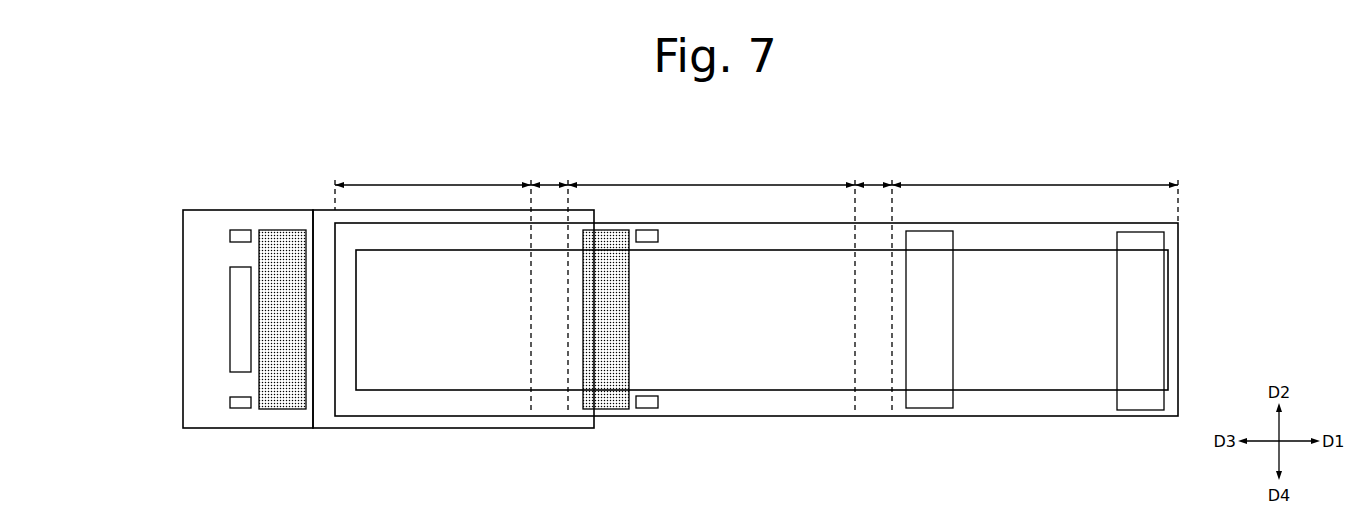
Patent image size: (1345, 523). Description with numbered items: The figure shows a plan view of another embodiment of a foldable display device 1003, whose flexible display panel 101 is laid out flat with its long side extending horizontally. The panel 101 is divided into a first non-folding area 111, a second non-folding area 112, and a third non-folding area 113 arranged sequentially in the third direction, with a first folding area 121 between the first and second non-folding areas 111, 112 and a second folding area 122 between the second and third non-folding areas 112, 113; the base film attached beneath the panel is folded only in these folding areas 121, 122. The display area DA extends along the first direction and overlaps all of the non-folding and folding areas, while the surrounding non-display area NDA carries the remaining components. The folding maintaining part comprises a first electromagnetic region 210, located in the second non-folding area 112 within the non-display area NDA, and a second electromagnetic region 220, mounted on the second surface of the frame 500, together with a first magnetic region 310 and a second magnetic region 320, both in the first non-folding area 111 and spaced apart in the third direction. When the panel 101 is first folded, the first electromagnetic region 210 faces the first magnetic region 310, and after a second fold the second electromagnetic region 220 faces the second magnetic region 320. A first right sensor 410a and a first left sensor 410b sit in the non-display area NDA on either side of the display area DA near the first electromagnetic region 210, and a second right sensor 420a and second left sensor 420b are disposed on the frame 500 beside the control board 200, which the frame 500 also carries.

The foldable display device 1003 is at (1110, 110).
The flexible display panel 101 is at (1197, 233).
The first non-folding area 111 is at (1035, 192).
The second non-folding area 112 is at (711, 175).
The third non-folding area 113 is at (433, 186).
The first folding area 121 is at (873, 287).
The second folding area 122 is at (549, 287).
The control board 200 is at (240, 320).
The first electromagnetic region 210 is at (606, 237).
The second electromagnetic region 220 is at (282, 238).
The first magnetic region 310 is at (1138, 240).
The second magnetic region 320 is at (927, 238).
The first right sensor 410a is at (646, 407).
The first left sensor 410b is at (646, 237).
The second right sensor 420a is at (238, 406).
The second left sensor 420b is at (240, 235).
The frame 500 is at (192, 383).
The non-display area NDA is at (384, 403).
The display area DA is at (449, 372).